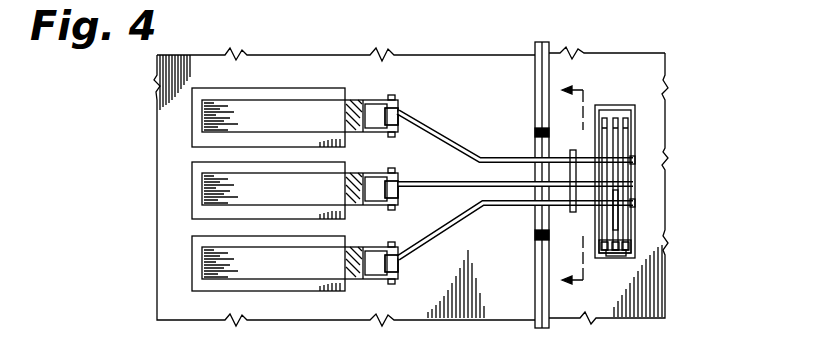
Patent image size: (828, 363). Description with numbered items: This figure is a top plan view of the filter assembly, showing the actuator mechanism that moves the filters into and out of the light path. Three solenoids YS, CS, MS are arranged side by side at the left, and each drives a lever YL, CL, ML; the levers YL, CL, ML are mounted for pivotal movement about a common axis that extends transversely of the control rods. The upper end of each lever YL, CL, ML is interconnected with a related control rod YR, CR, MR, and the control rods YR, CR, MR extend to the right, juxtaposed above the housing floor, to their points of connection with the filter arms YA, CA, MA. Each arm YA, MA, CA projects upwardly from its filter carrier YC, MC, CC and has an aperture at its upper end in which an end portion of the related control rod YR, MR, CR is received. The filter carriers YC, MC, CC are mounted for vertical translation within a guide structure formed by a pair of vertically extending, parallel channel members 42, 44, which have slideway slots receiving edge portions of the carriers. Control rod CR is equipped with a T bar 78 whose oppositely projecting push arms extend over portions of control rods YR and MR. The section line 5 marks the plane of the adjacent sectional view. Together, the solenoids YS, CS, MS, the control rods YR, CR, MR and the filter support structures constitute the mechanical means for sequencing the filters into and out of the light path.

The solenoid YS is at (278, 128).
The solenoid CS is at (278, 201).
The solenoid MS is at (280, 275).
The lever YL is at (402, 107).
The control rod YR is at (447, 137).
The lever CL is at (400, 180).
The control rod CR is at (456, 183).
The lever ML is at (400, 268).
The control rod MR is at (450, 230).
The T bar 78 is at (547, 165).
The arm CA is at (577, 214).
The channel member 42 is at (622, 106).
The filter carrier YC is at (628, 141).
The arm YA is at (631, 149).
The arm MA is at (634, 209).
The filter carrier MC is at (618, 222).
The channel member 44 is at (620, 257).
The filter carrier CC is at (611, 258).
The section line 5- 5 is at (582, 186).